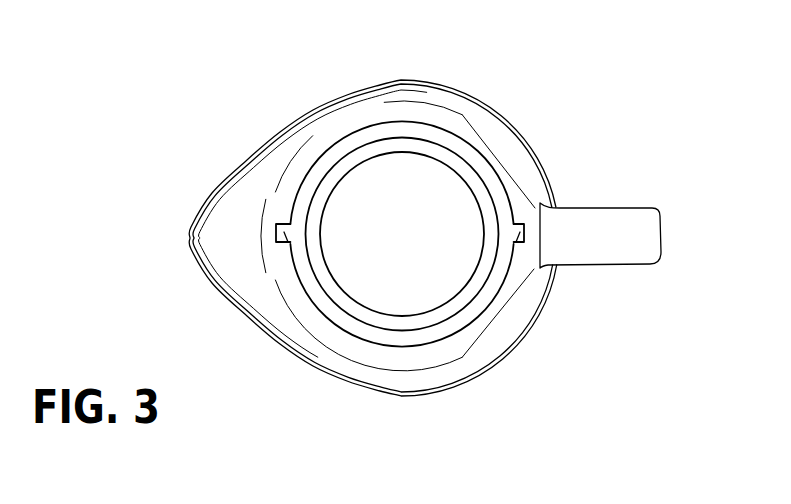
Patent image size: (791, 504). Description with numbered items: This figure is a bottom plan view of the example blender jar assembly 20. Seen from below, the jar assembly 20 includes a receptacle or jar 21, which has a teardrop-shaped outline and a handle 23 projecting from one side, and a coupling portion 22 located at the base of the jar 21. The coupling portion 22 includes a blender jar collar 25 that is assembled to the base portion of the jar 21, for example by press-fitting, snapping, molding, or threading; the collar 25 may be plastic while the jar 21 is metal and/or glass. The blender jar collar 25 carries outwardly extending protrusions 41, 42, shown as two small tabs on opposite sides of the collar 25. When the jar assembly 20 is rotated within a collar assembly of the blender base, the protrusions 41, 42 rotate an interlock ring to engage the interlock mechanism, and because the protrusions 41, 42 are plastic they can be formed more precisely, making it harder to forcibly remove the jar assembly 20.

The jar assembly 20 is at (275, 73).
The jar 21 is at (252, 185).
The coupling portion 22 is at (503, 169).
The handle 23 is at (597, 225).
The blender jar collar 25 is at (402, 130).
The protrusion 41 is at (282, 236).
The protrusion 42 is at (518, 242).